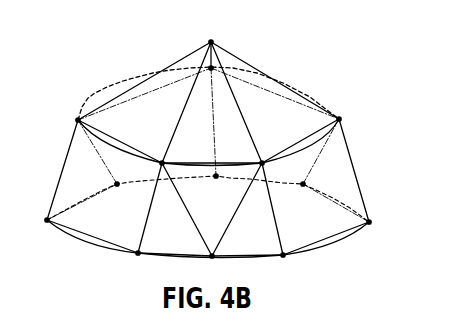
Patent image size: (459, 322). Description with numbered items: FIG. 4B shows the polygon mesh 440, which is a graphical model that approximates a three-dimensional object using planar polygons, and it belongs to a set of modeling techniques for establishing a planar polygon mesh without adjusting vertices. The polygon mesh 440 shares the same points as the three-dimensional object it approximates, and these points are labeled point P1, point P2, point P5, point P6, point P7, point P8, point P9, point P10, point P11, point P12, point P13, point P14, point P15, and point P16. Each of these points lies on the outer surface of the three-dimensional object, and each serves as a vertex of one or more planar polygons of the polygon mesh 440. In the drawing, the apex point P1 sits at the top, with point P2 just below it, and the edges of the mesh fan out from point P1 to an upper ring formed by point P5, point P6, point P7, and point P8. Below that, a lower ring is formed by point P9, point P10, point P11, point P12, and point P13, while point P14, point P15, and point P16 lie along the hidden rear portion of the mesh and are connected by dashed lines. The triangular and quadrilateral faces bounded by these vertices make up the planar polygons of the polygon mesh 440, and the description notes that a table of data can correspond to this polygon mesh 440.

The polygon mesh 440 is at (211, 144).
The point P1 is at (220, 39).
The point P2 is at (218, 77).
The point P5 is at (71, 121).
The point P6 is at (171, 158).
The point P7 is at (265, 157).
The point P8 is at (347, 119).
The point P9 is at (38, 221).
The point P10 is at (133, 261).
The point P11 is at (204, 262).
The point P12 is at (281, 263).
The point P13 is at (380, 229).
The point P14 is at (301, 192).
The point P15 is at (206, 172).
The point P16 is at (113, 194).